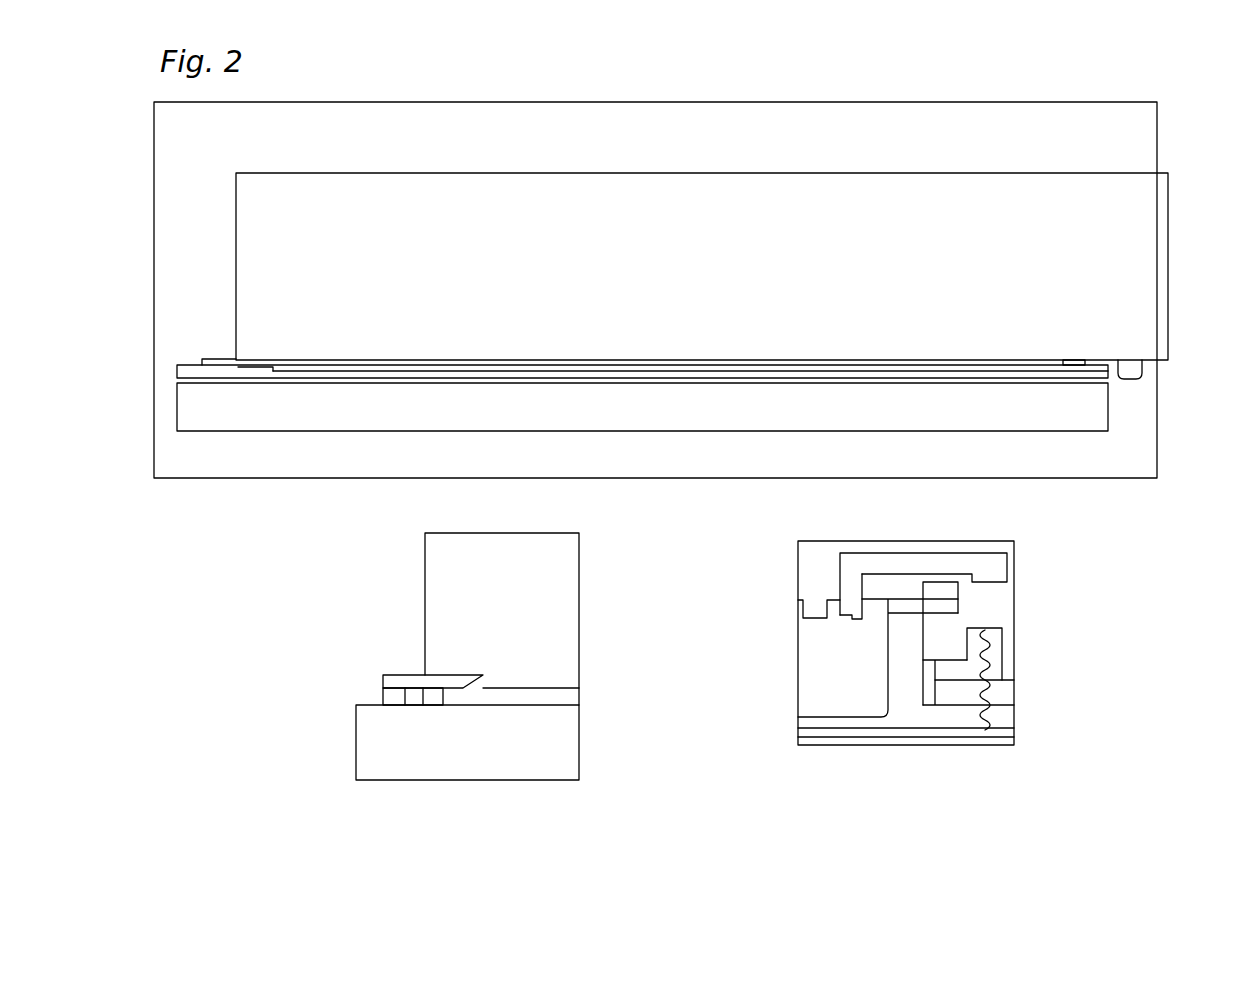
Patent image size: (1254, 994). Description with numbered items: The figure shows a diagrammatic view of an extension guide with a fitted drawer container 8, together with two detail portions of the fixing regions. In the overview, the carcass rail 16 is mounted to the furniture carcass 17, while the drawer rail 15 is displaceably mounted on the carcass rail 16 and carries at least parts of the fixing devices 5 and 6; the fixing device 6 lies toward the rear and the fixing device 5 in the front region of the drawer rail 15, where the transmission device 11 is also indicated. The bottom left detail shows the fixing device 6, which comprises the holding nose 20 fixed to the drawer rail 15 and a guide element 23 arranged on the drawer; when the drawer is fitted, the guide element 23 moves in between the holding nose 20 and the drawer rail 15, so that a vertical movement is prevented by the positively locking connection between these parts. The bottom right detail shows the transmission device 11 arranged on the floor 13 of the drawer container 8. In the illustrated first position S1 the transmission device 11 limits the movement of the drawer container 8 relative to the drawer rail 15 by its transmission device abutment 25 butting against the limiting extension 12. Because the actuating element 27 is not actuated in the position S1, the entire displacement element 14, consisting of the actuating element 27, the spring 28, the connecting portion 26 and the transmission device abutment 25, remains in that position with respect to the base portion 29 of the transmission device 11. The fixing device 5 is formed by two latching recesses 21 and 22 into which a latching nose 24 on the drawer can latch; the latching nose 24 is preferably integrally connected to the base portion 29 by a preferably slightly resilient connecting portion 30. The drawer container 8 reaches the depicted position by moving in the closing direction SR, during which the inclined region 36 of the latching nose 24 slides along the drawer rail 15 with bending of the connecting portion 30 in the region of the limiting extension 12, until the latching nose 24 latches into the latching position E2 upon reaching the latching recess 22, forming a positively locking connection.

The fixing device 5 is at (1068, 361).
The fixing device 6 is at (215, 359).
The drawer container 8 is at (632, 210).
The transmission device 11 is at (1132, 368).
The limiting extension 12 is at (898, 628).
The floor 13 is at (902, 695).
The displacement element 14 is at (1113, 660).
The drawer rail 15 is at (707, 370).
The carcass rail 16 is at (338, 405).
The furniture carcass 17 is at (465, 152).
The holding nose 20 is at (413, 678).
The latching recess 21 is at (815, 616).
The latching recess 22 is at (850, 612).
The guide element 23 is at (462, 700).
The latching nose 24 is at (845, 595).
The transmission device abutment 25 is at (943, 608).
The connecting portion 26 is at (943, 672).
The actuating element 27 is at (958, 692).
The spring 28 is at (985, 667).
The base portion 29 is at (993, 594).
The connecting portion 30 is at (953, 565).
The inclined region 36 is at (849, 610).
The first position S1 is at (999, 735).
The latching position E2 is at (850, 645).
The closing direction SR is at (1100, 790).